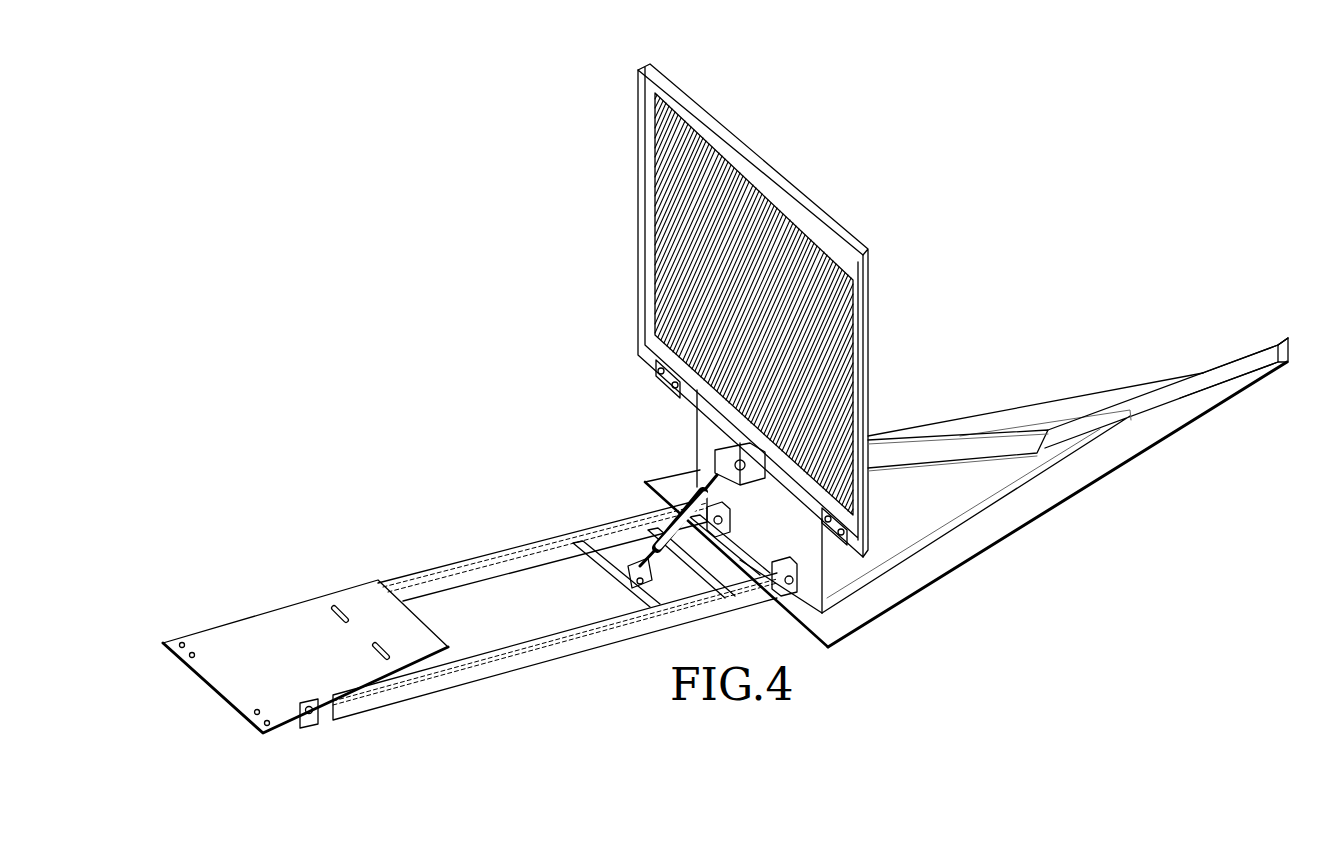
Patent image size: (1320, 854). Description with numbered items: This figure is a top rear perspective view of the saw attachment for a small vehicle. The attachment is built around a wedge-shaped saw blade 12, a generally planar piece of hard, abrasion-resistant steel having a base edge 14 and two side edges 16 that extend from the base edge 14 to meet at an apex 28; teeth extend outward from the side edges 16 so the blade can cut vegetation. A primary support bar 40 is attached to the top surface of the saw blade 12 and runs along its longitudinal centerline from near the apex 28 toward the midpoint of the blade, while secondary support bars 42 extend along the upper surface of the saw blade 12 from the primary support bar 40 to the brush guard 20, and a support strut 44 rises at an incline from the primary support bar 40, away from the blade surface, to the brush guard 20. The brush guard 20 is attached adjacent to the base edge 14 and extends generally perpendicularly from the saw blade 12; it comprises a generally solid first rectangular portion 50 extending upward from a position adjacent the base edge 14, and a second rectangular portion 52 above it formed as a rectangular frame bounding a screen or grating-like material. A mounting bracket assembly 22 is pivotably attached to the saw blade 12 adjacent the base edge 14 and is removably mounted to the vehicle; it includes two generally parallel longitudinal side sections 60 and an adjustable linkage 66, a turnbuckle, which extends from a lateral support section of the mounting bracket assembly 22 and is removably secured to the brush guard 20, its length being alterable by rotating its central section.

The saw blade 12 is at (1152, 440).
The base edge 14 is at (805, 630).
The side edges 16 is at (1100, 476).
The brush guard 20 is at (638, 206).
The mounting bracket assembly 22 is at (436, 522).
The apex 28 is at (1288, 358).
The primary support bar 40 is at (1202, 383).
The secondary support bars 42 is at (935, 535).
The support strut 44 is at (917, 450).
The first rectangular portion 50 is at (697, 450).
The second rectangular portion 52 is at (638, 263).
The longitudinal side sections 60 is at (522, 548).
The adjustable linkage 66 is at (645, 502).